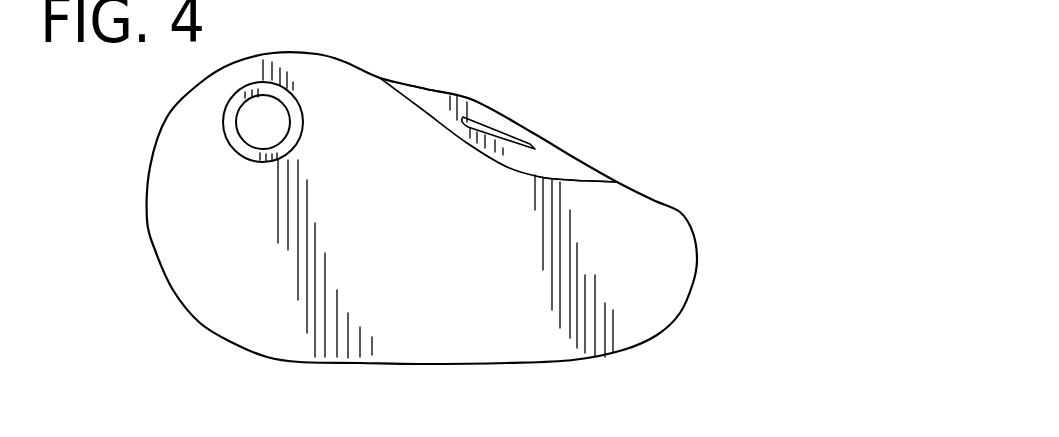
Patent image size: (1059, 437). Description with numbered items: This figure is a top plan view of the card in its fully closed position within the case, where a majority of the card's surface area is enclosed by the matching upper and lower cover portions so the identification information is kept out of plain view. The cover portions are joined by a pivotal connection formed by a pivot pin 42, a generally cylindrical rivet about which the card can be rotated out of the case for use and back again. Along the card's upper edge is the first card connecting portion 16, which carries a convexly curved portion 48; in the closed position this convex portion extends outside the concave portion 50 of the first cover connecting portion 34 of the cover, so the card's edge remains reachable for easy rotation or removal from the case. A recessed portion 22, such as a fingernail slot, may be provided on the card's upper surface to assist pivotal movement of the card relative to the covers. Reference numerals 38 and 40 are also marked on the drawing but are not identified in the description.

The first card connecting portion 16 is at (453, 79).
The recessed portion 22 is at (512, 125).
The first cover connecting portion 34 is at (560, 175).
The upper portion 38 is at (574, 0).
The housing body 40 is at (171, 289).
The pivot pin 42 is at (304, 122).
The convexly curved portion 48 is at (490, 102).
The concavely curved portion 50 is at (477, 145).